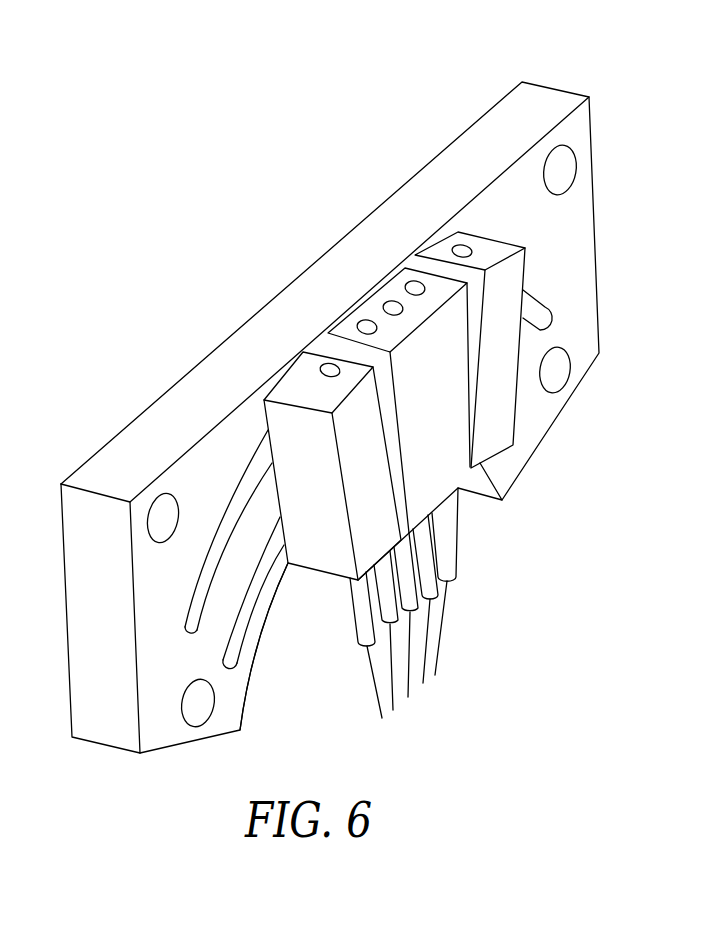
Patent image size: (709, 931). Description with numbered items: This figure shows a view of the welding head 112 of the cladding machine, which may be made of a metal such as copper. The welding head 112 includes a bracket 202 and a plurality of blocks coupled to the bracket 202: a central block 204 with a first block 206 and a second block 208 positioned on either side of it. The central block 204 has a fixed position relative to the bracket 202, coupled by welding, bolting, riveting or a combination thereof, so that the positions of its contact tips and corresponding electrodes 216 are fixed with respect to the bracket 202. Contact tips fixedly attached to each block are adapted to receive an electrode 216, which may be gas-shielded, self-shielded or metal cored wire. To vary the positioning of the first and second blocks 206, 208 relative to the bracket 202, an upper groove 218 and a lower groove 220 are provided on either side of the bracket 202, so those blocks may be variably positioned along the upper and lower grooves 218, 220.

The welding head 112 is at (642, 573).
The bracket 202 is at (538, 105).
The central block 204 is at (447, 418).
The first block 206 is at (382, 494).
The second block 208 is at (512, 375).
The electrode 216 is at (443, 684).
The upper groove 218 is at (230, 497).
The lower groove 220 is at (242, 637).